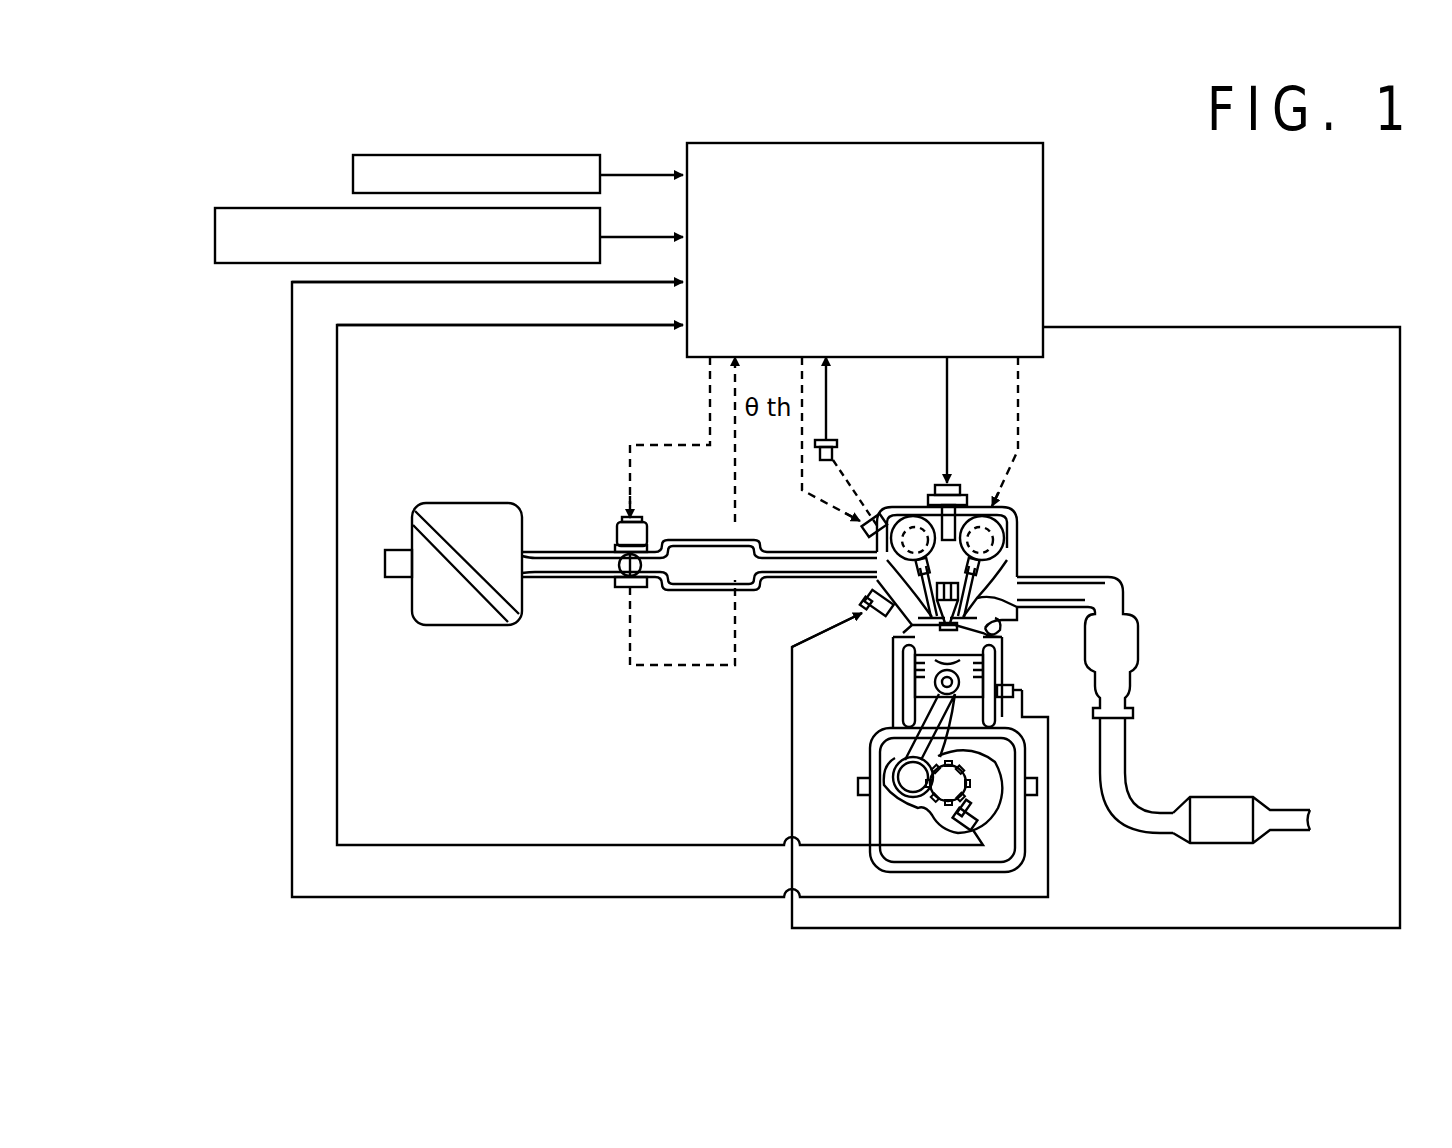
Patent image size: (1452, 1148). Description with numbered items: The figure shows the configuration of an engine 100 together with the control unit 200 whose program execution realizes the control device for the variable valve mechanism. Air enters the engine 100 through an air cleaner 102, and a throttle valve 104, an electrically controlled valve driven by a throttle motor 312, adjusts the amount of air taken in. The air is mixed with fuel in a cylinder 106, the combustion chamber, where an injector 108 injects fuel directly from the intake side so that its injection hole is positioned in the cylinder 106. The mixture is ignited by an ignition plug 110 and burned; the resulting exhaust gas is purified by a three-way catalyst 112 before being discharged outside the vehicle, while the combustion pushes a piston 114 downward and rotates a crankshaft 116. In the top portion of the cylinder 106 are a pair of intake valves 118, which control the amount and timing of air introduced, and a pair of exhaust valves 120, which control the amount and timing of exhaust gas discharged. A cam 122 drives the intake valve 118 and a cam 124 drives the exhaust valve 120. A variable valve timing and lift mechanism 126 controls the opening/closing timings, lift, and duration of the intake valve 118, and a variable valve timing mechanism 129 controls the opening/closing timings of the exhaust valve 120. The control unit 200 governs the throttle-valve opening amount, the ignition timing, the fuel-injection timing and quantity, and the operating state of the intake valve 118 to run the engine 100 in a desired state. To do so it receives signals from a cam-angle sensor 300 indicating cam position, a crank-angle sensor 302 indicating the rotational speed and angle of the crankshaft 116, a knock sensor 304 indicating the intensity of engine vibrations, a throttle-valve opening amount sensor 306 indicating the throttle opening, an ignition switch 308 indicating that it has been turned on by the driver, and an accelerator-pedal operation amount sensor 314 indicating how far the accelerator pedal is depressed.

The engine 100 is at (1118, 486).
The air cleaner 102 is at (468, 503).
The throttle valve 104 is at (655, 541).
The cylinder 106 is at (928, 648).
The injector 108 is at (862, 603).
The ignition plug 110 is at (960, 498).
The three-way catalyst 112 is at (1140, 643).
The piston 114 is at (930, 700).
The crankshaft 116 is at (983, 832).
The intake valve 118 is at (862, 533).
The exhaust valve 120 is at (1003, 610).
The cam 122 is at (905, 525).
The cam 124 is at (1003, 545).
The variable valve timing and lift mechanism 126 is at (908, 518).
The variable valve timing mechanism 129 is at (1022, 518).
The control unit 200 is at (864, 143).
The cam-angle sensor 300 is at (838, 443).
The crank-angle sensor 302 is at (977, 813).
The knock sensor 304 is at (1012, 688).
The throttle-valve opening amount sensor 306 is at (620, 580).
The ignition switch 308 is at (353, 175).
The throttle motor 312 is at (617, 540).
The accelerator-pedal operation amount sensor 314 is at (215, 237).